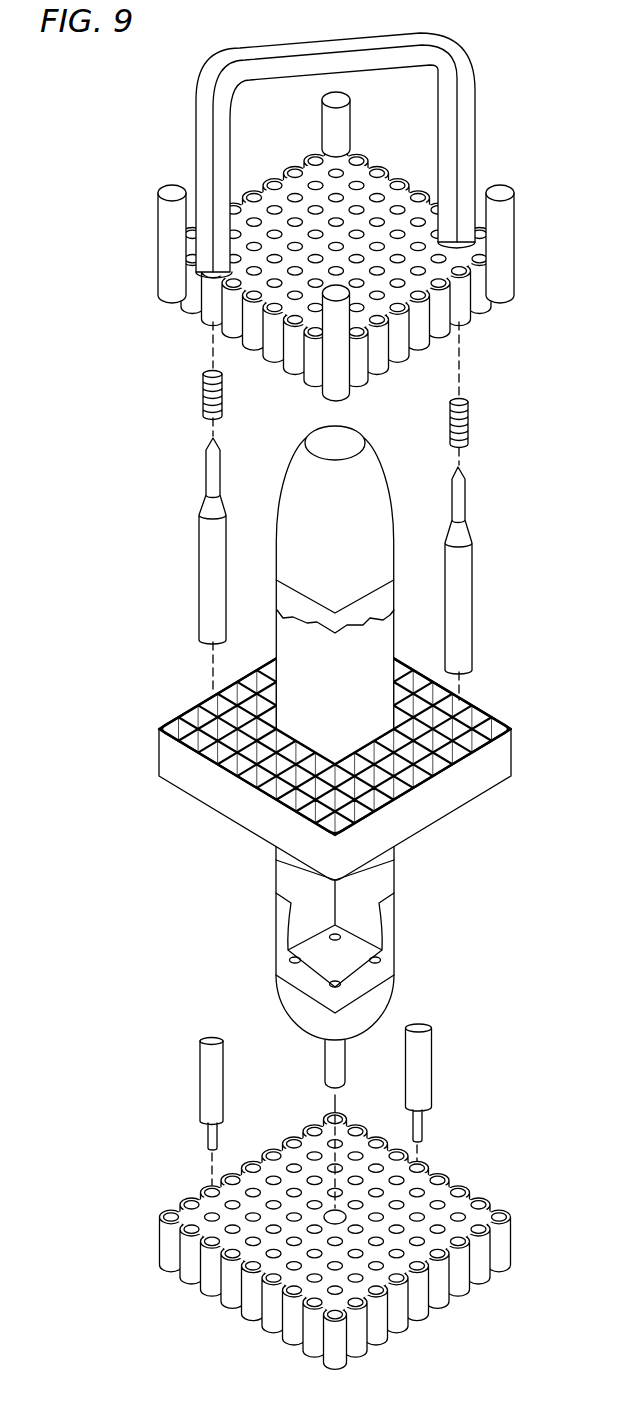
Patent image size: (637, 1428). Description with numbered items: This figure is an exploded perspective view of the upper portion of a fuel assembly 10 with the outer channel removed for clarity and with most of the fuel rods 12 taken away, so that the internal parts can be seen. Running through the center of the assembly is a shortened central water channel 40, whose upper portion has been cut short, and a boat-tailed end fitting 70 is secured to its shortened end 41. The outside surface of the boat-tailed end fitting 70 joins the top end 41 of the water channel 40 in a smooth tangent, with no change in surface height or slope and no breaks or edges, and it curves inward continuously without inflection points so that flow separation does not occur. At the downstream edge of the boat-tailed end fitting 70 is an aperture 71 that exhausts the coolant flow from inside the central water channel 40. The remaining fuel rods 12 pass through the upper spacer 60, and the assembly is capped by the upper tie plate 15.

The fuel assembly 10 is at (143, 498).
The fuel rods 12 is at (208, 582).
The upper tie plate 15 is at (483, 305).
The shortened central water channel 40 is at (349, 678).
The shortened end 41 is at (383, 603).
The upper spacer 60 is at (463, 803).
The boat-tailed end fitting 70 is at (348, 577).
The aperture 71 is at (350, 438).